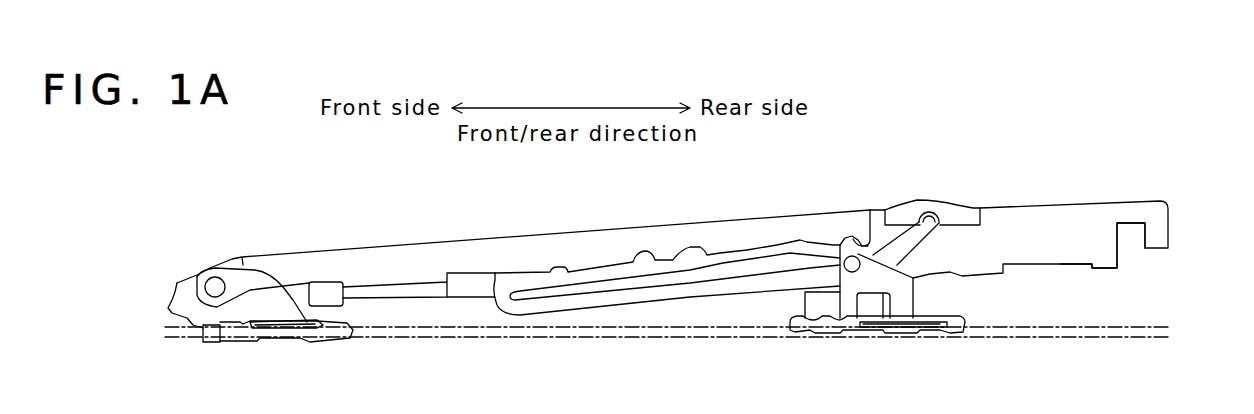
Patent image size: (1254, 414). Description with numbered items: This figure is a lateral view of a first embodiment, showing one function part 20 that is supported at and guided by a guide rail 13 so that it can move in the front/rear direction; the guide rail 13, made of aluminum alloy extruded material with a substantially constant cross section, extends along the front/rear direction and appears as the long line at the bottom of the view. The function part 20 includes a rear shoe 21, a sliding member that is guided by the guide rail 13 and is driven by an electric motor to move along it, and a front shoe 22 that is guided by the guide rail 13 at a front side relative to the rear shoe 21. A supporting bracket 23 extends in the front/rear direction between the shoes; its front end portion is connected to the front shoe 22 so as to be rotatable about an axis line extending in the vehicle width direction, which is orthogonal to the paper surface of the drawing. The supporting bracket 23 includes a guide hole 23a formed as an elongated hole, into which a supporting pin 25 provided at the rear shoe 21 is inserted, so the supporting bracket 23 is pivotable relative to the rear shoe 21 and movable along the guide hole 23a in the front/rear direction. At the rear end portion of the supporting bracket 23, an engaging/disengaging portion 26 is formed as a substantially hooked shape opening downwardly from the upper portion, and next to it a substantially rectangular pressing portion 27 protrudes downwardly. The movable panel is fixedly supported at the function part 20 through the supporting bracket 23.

The guide rail 13 is at (648, 340).
The function part 20 is at (976, 155).
The rear shoe 21 is at (845, 330).
The front shoe 22 is at (233, 333).
The supporting bracket 23 is at (453, 243).
The guide hole 23a is at (713, 266).
The supporting pin 25 is at (853, 255).
The engaging/disengaging portion 26 is at (1168, 225).
The pressing portion 27 is at (1105, 268).